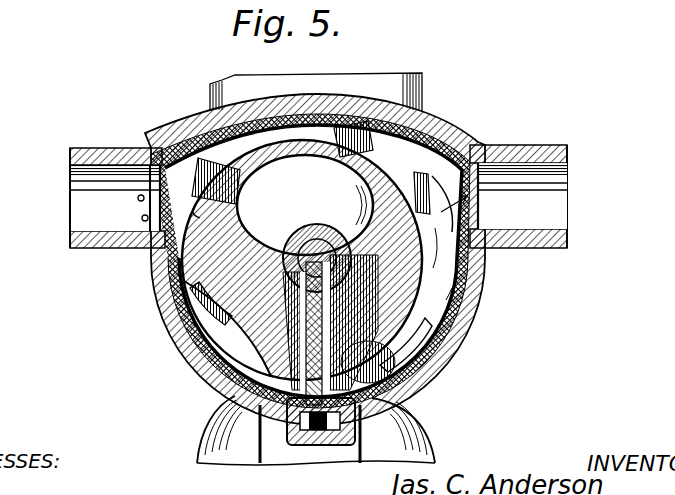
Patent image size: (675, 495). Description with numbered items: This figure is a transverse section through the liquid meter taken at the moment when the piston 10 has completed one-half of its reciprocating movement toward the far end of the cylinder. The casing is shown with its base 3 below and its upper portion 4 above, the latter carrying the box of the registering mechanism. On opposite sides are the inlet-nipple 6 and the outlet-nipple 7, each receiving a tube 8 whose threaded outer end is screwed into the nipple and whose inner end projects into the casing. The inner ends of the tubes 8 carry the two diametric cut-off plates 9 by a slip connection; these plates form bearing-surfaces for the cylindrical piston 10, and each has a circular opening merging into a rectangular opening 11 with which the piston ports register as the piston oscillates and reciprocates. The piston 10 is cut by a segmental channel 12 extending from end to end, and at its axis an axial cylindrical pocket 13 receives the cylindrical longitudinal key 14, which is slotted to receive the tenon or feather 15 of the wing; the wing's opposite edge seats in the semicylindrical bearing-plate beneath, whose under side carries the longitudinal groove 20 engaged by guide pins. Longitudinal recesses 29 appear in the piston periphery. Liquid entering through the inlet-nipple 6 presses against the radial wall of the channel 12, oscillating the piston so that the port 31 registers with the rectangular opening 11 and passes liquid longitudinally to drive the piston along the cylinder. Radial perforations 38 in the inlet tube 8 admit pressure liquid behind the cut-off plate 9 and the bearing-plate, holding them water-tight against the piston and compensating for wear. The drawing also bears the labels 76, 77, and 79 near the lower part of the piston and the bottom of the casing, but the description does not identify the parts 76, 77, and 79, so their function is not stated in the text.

The base of the casing 3 is at (308, 430).
The upper portion of the casing 4 is at (325, 92).
The inlet-nipple 6 is at (117, 189).
The outlet-nipple 7 is at (526, 155).
The tubes 8 is at (70, 168).
The cut-off plates 9 is at (182, 148).
The piston 10 is at (207, 334).
The rectangular opening 11 is at (468, 200).
The segmental channel 12 is at (340, 333).
The axial cylindrical pocket 13 is at (303, 232).
The cylindrical longitudinal key 14 is at (322, 238).
The tenon or feather 15 is at (288, 250).
The longitudinal groove 20 is at (331, 432).
The longitudinal recesses 29 is at (478, 312).
The port 31 is at (190, 219).
The radial perforations 38 is at (319, 197).
The nut 76 is at (365, 365).
The seat 77 is at (428, 376).
The bolt 79 is at (313, 440).